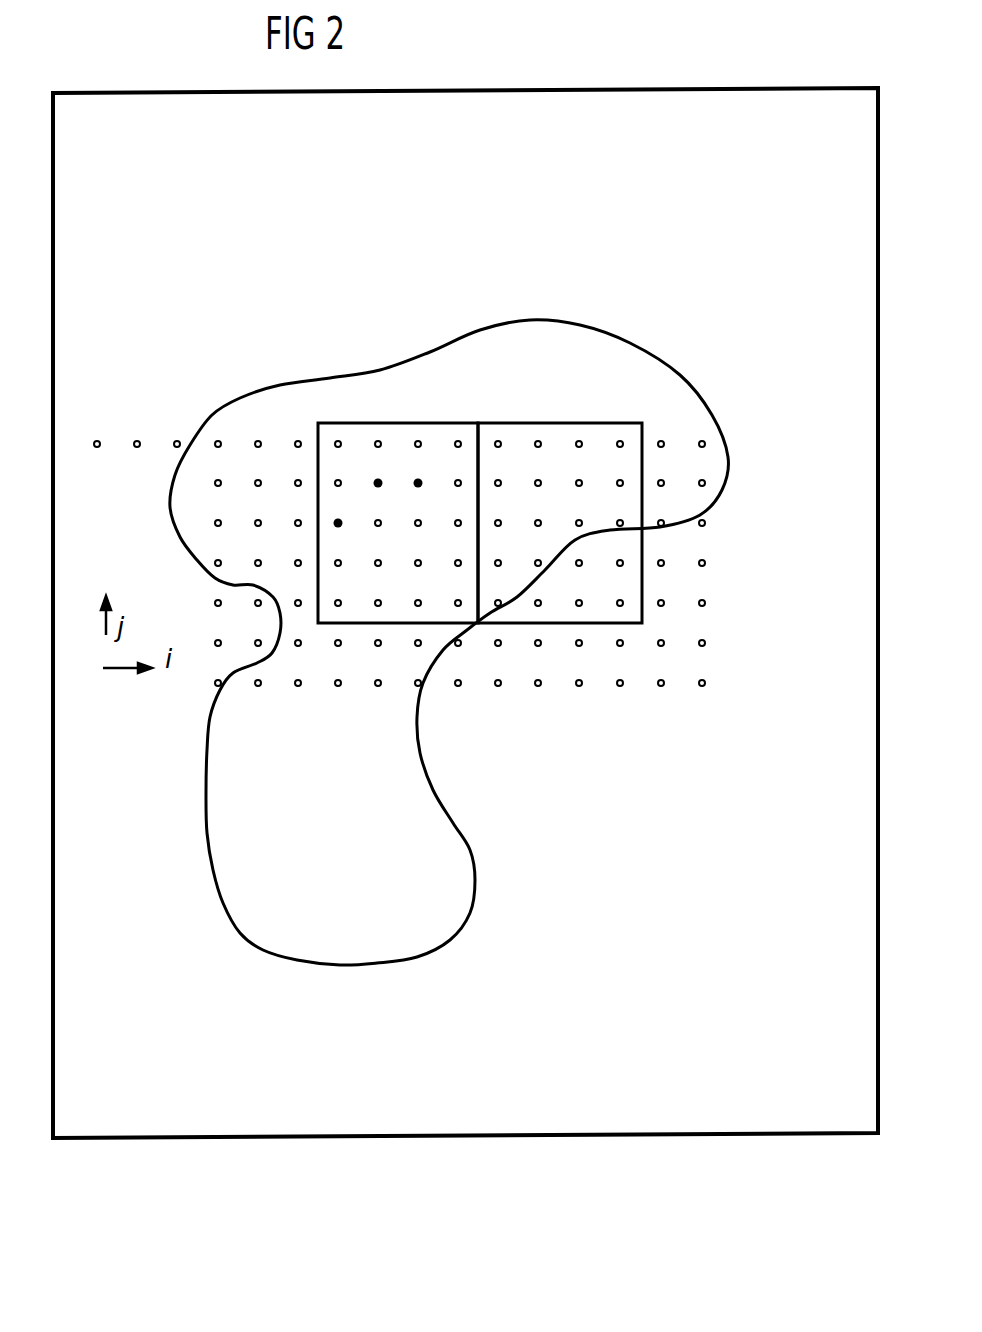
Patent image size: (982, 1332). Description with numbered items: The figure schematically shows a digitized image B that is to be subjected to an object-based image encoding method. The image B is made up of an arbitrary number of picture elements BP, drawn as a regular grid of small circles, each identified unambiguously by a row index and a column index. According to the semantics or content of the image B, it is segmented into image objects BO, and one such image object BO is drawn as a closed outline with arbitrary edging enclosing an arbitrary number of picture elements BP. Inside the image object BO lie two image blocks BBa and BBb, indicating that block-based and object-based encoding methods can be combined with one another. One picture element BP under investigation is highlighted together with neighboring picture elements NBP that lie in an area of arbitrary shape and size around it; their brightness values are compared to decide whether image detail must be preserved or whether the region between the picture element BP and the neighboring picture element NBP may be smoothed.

The image B is at (620, 115).
The image object BO is at (438, 875).
The image block BBa is at (397, 432).
The image block BBb is at (557, 438).
The picture element BP is at (378, 483).
The neighboring picture element NBP is at (418, 483).